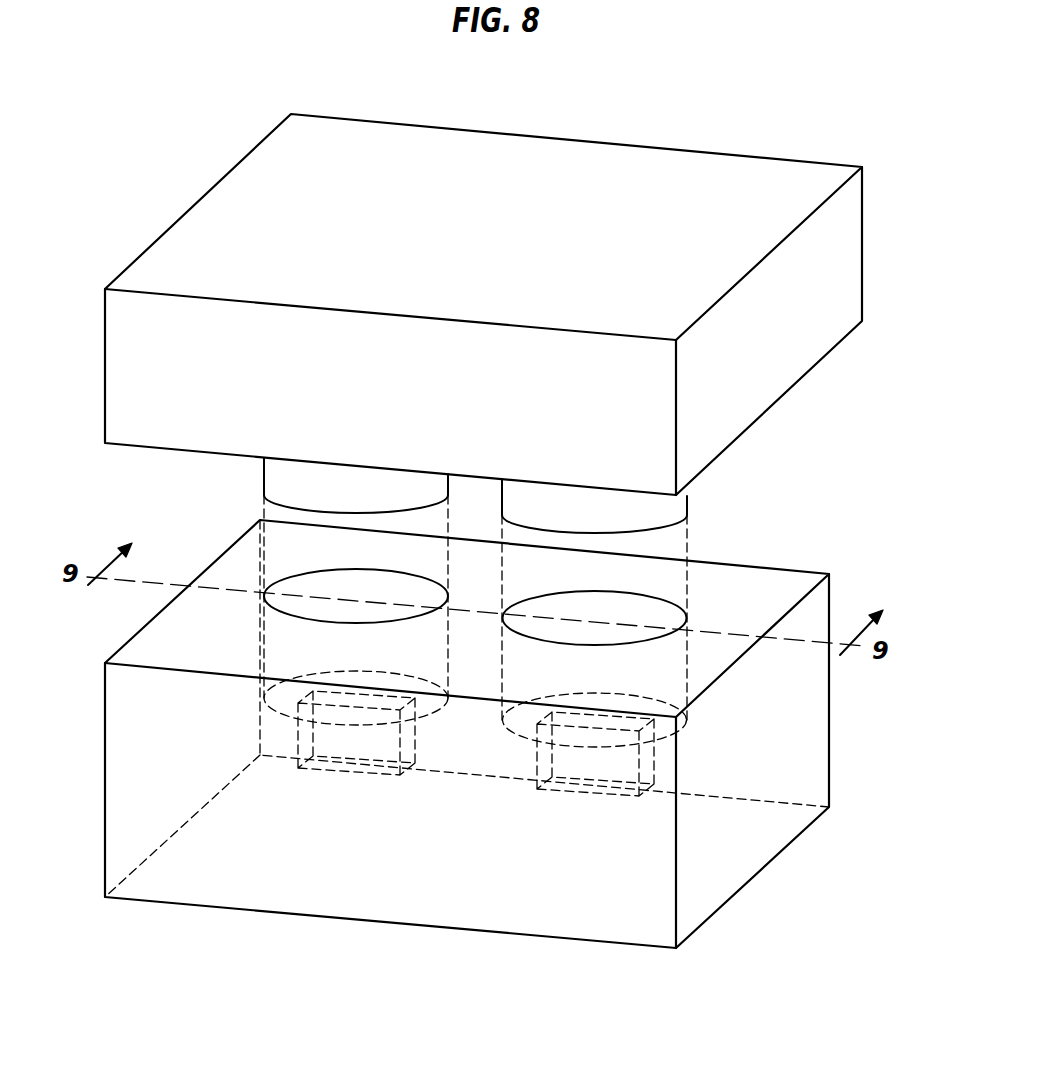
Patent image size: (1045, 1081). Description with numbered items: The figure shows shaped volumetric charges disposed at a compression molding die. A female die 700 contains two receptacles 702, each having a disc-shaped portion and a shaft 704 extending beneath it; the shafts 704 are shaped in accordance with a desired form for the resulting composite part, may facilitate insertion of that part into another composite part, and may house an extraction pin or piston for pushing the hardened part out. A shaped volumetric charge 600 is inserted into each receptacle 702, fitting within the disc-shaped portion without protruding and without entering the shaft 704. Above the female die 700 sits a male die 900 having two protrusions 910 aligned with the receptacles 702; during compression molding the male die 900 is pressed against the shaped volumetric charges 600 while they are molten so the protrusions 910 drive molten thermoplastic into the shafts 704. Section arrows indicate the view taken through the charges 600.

The male die 900 is at (759, 157).
The protrusions 910 is at (283, 470).
The female die 700 is at (829, 751).
The shaped volumetric charge 600 is at (361, 577).
The receptacles 702 is at (331, 623).
The shafts 704 is at (537, 751).